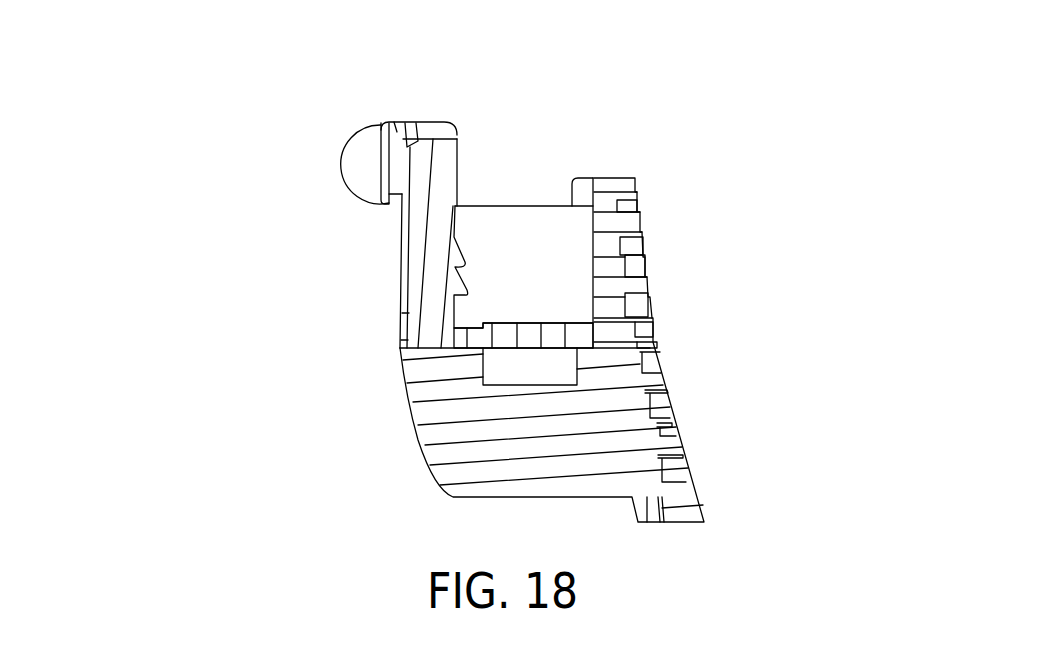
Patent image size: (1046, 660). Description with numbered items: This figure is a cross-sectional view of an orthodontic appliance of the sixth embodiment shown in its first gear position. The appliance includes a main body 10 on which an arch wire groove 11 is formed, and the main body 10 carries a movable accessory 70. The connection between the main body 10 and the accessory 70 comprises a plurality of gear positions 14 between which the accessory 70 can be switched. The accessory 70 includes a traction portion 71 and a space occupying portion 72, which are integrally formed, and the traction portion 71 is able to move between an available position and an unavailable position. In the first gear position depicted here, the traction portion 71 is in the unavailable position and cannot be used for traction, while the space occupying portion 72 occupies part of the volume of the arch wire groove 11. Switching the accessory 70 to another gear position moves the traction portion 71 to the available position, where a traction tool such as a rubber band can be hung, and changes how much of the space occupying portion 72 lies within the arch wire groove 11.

The main body 10 is at (610, 268).
The arch wire groove 11 is at (540, 354).
The gear positions 14 is at (465, 266).
The accessory 70 is at (430, 273).
The traction portion 71 is at (433, 160).
The space occupying portion 72 is at (525, 337).